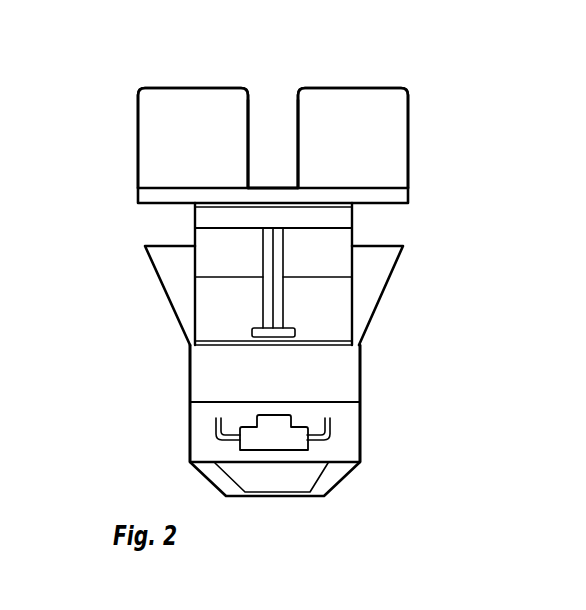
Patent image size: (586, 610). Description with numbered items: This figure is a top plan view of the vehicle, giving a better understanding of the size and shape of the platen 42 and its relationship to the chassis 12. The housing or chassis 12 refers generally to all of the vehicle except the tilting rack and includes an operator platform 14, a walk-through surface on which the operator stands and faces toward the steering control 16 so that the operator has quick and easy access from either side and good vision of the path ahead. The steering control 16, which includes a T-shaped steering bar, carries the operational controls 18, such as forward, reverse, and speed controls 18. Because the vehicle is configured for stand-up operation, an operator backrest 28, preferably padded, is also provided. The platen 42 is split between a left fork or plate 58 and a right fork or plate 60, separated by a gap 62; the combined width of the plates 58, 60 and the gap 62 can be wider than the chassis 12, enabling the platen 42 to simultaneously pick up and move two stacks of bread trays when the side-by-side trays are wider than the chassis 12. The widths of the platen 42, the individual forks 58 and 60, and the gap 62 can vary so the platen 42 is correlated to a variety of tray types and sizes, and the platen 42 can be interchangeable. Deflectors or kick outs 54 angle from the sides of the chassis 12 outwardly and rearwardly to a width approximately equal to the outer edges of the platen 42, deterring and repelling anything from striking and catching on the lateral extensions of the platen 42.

The housing or chassis 12 is at (190, 422).
The operator platform 14 is at (338, 305).
The steering control 16 is at (293, 422).
The operational controls 18 is at (293, 438).
The operator backrest 28 is at (253, 332).
The platen 42 is at (413, 173).
The deflectors or kick outs 54 is at (173, 265).
The left fork or plate 58 is at (163, 163).
The right fork or plate 60 is at (377, 133).
The gap 62 is at (275, 155).